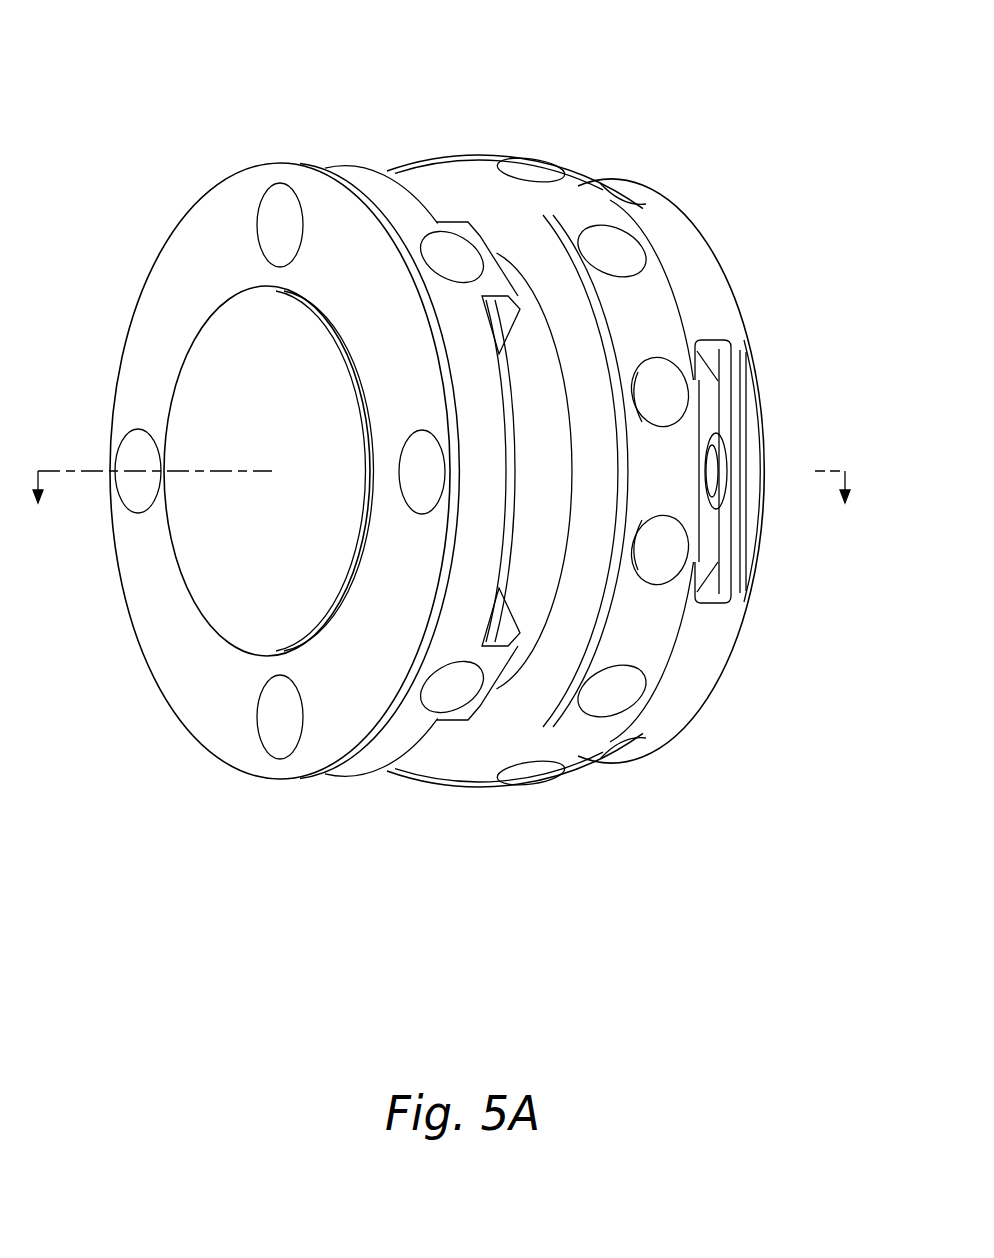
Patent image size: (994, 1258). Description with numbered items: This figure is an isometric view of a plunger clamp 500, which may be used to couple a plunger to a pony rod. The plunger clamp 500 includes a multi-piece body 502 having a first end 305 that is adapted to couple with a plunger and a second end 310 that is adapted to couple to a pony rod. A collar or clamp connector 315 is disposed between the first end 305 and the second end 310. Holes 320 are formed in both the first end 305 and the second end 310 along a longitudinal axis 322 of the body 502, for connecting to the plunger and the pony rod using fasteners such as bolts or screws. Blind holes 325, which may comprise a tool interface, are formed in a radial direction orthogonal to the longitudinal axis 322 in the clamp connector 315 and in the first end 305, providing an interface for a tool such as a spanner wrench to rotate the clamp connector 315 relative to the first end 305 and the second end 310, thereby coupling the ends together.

The plunger clamp 500 is at (152, 34).
The multi-piece body 502 is at (356, 145).
The first end 305 is at (141, 290).
The second end 310 is at (694, 245).
The clamp connector 315 is at (480, 787).
The holes 320 is at (268, 233).
The longitudinal axis 322 is at (97, 470).
The blind holes 325 is at (455, 256).